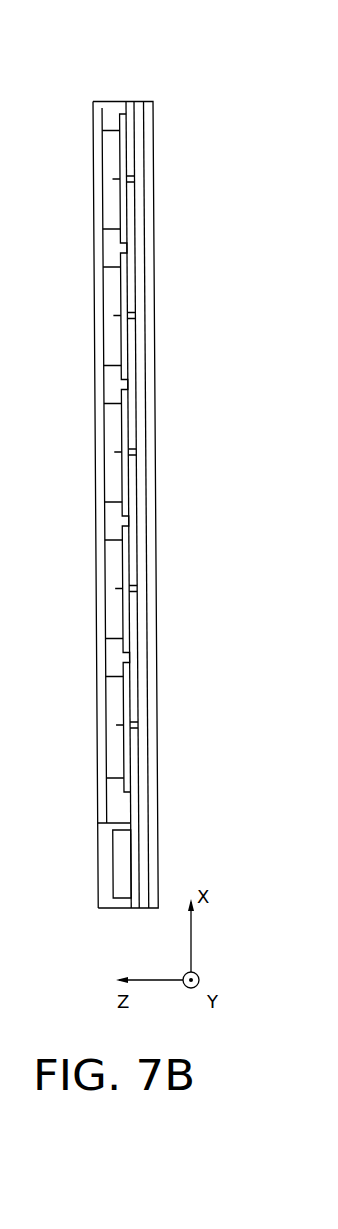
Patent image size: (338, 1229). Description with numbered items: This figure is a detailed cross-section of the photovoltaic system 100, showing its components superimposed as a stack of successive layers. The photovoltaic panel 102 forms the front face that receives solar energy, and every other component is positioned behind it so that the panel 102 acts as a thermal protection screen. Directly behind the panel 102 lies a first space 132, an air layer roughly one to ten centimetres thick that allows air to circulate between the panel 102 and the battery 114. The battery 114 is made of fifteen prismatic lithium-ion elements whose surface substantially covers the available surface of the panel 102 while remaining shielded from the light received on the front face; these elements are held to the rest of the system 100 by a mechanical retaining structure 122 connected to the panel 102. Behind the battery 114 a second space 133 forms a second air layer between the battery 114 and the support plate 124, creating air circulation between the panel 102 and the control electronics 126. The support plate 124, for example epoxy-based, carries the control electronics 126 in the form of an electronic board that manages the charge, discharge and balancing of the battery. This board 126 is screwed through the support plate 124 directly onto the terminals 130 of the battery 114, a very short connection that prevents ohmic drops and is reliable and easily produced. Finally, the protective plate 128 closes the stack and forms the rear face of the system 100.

The photovoltaic system 100 is at (128, 83).
The photovoltaic panel 102 is at (154, 187).
The battery 114 is at (128, 464).
The mechanical retaining structure 122 is at (120, 730).
The support plate 124 is at (106, 790).
The control electronics 126 is at (123, 865).
The protective plate 128 is at (94, 318).
The terminals 130 is at (117, 541).
The first space 132 is at (144, 633).
The second space 133 is at (110, 143).